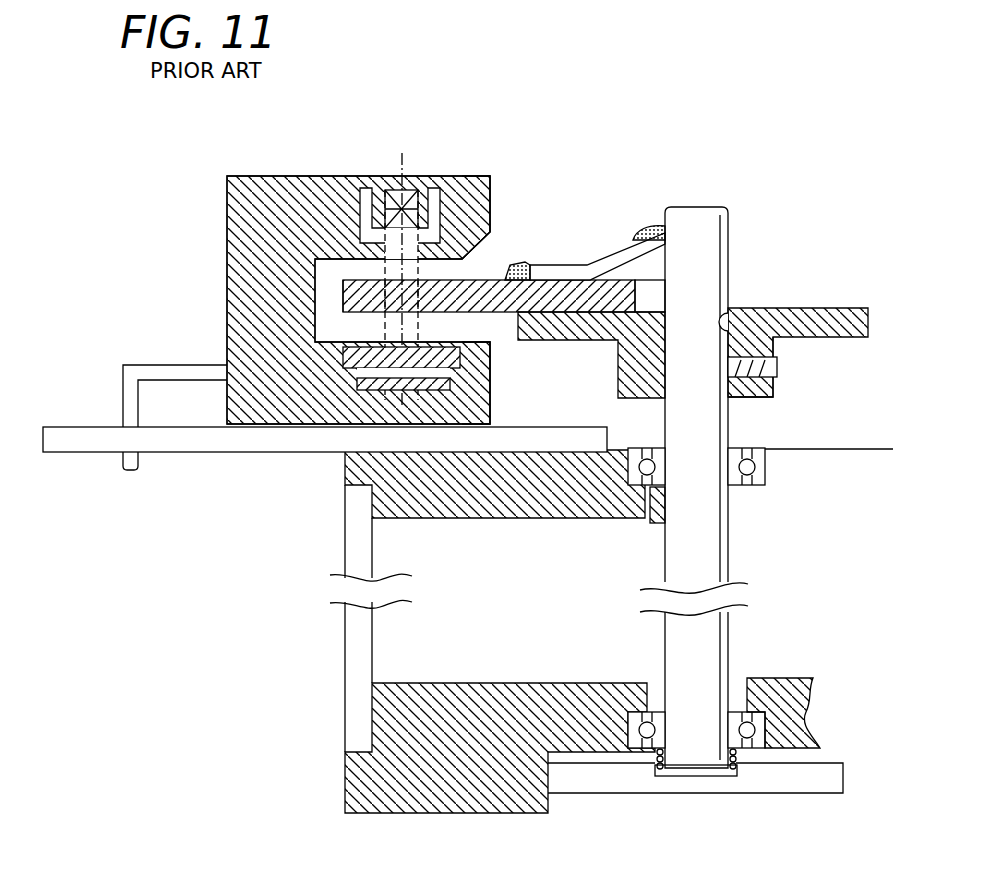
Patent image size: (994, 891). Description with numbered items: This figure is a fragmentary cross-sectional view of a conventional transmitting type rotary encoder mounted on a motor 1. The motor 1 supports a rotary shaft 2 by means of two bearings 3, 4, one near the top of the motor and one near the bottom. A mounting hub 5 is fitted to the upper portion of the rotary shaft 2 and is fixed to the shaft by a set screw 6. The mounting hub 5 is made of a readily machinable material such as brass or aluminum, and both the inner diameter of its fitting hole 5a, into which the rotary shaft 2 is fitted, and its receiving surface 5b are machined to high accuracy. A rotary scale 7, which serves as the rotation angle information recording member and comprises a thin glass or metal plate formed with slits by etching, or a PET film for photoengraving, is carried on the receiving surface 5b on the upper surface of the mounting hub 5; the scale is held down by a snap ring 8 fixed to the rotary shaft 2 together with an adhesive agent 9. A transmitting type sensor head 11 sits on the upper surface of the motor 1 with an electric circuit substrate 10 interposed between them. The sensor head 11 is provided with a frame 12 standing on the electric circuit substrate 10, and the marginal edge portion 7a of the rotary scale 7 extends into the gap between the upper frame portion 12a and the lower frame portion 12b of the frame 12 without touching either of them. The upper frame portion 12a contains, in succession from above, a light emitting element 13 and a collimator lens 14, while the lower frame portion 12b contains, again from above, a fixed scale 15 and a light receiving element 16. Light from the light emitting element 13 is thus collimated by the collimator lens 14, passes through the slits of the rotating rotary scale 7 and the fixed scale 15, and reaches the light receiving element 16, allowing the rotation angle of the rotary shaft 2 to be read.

The motor 1 is at (343, 795).
The rotary shaft 2 is at (700, 228).
The bearing 3 is at (767, 472).
The bearing 4 is at (765, 728).
The mounting hub 5 is at (853, 308).
The fitting hole 5a is at (723, 322).
The receiving surface 5b is at (812, 308).
The set screw 6 is at (778, 367).
The rotary scale 7 is at (551, 290).
The holding plate end 7a is at (343, 293).
The snap ring 8 is at (598, 263).
The adhesive agent 9 is at (645, 226).
The electric circuit substrate 10 is at (76, 437).
The transmitting type sensor head 11 is at (227, 258).
The frame 12 is at (255, 176).
The upper frame portion 12a is at (458, 176).
The lower frame portion 12b is at (490, 388).
The light emitting element 13 is at (400, 186).
The collimator lens 14 is at (425, 238).
The fixed scale 15 is at (345, 353).
The light receiving element 16 is at (370, 385).